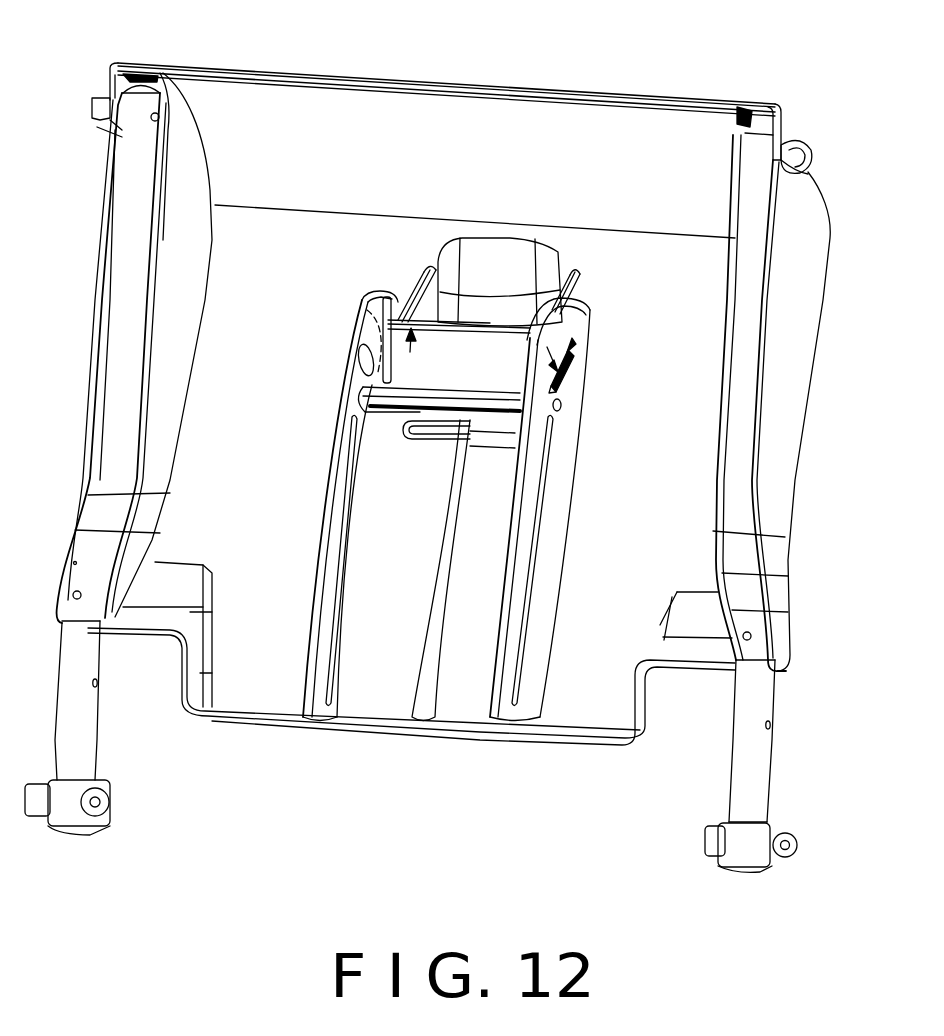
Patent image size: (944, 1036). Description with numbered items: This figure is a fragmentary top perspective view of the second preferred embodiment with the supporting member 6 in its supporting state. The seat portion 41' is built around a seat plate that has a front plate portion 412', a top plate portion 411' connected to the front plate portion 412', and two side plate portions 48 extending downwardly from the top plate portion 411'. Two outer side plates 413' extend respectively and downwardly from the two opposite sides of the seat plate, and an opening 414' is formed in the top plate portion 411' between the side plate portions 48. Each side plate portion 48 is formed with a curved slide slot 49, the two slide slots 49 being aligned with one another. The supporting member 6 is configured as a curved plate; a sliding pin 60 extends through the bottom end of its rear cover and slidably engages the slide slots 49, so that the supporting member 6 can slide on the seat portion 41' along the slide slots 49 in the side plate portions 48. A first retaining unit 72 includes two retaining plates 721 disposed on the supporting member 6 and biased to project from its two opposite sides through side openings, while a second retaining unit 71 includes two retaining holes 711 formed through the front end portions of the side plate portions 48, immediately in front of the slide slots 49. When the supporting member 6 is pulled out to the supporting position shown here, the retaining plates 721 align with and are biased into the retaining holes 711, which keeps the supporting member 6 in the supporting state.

The seat portion 41' is at (411, 482).
The top plate portion 411' is at (411, 740).
The front plate portion 412' is at (452, 99).
The outer side plate 413' is at (835, 415).
The opening 414' is at (383, 352).
The side plate portion 48 is at (178, 180).
The slide slot 49 is at (330, 523).
The supporting member 6 is at (413, 383).
The sliding pin 60 is at (560, 410).
The second retaining unit 71 is at (372, 357).
The retaining hole 711 is at (567, 342).
The first retaining unit 72 is at (367, 312).
The retaining plate 721 is at (568, 377).